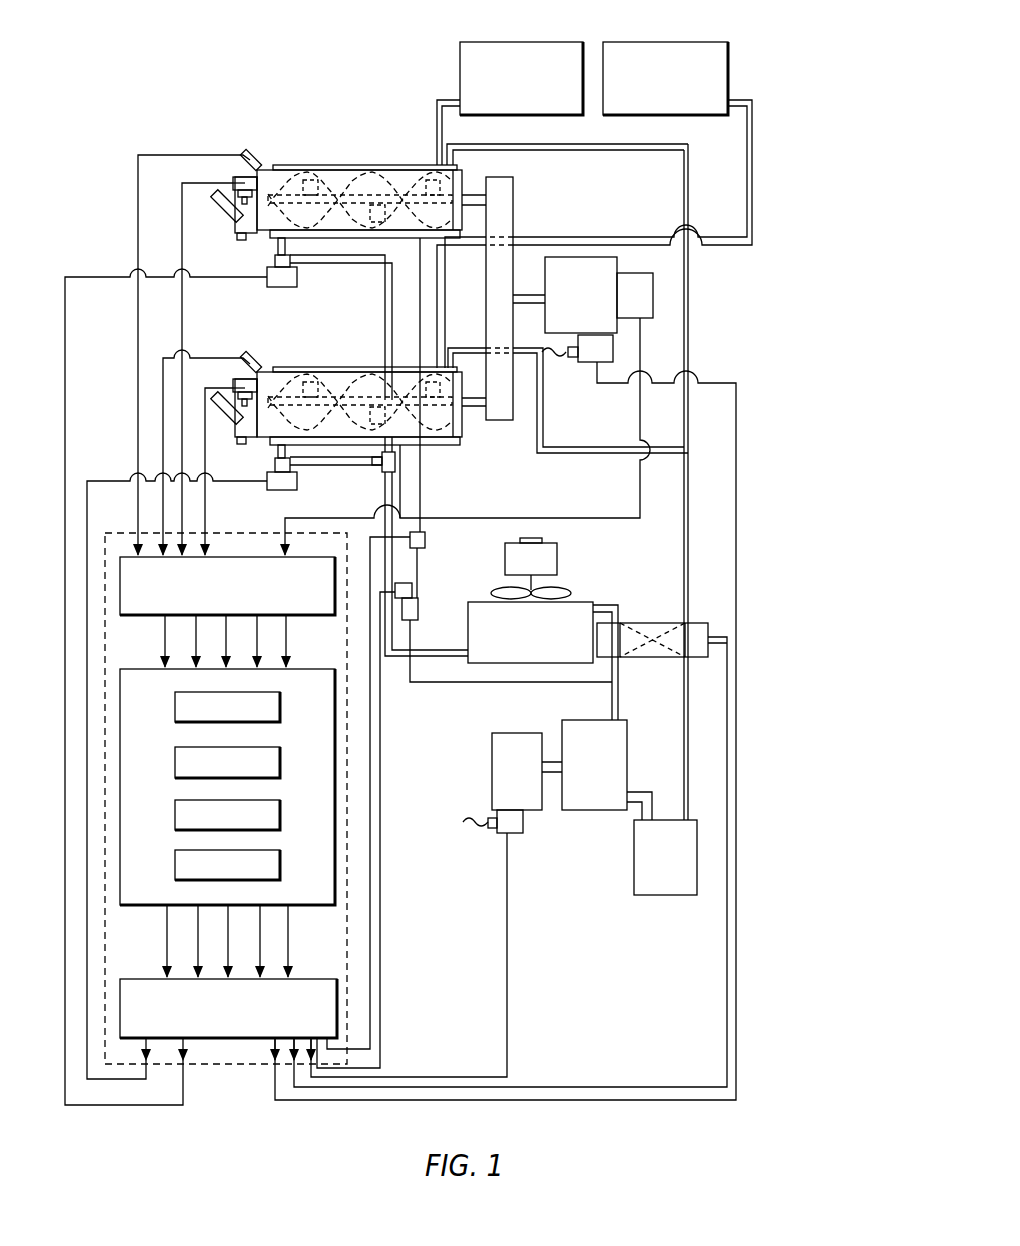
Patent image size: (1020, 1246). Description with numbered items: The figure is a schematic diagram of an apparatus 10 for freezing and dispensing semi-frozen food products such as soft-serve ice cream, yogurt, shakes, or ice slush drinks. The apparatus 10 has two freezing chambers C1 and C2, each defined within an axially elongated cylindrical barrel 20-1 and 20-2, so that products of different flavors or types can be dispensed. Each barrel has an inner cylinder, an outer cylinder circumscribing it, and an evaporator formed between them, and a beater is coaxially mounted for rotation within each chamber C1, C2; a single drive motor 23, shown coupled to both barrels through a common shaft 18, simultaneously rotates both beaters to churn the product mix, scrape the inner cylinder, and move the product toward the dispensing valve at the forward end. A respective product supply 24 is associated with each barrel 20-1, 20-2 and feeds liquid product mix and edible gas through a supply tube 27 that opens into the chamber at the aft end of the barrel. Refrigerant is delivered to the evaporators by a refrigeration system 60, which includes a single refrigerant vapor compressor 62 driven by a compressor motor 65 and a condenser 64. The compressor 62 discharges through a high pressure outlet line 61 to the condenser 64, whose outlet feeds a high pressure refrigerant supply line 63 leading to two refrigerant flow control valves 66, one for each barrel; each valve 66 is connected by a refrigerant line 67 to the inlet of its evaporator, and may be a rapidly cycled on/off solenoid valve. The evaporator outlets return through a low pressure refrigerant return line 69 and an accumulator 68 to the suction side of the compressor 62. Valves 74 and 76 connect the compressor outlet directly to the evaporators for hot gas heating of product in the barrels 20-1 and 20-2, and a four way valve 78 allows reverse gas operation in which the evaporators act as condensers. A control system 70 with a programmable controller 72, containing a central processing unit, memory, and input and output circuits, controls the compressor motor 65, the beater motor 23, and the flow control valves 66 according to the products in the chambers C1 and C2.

The apparatus 10 is at (772, 190).
The drive shaft / support bar 18 is at (496, 420).
The barrel 20-1 is at (443, 177).
The barrel 20-2 is at (443, 388).
The drive motor 23 is at (578, 257).
The product supply 24 is at (512, 40).
The supply tube 27 is at (437, 102).
The refrigeration system 60 is at (539, 812).
The high pressure outlet line 61 is at (618, 682).
The refrigerant vapor compressor 62 is at (598, 720).
The high pressure refrigerant supply line 63 is at (390, 565).
The condenser 64 is at (506, 665).
The compressor motor 65 is at (504, 733).
The refrigerant flow control valve 66 is at (297, 277).
The refrigerant line 67 is at (276, 245).
The accumulator 68 is at (634, 872).
The low pressure refrigerant return line 69 is at (690, 290).
The control system 70 is at (268, 798).
The programmable controller 72 is at (320, 768).
The valve 74 is at (425, 537).
The valve 76 is at (412, 592).
The four way valve 78 is at (708, 628).
The freezing chamber C1 is at (368, 180).
The freezing chamber C2 is at (365, 385).